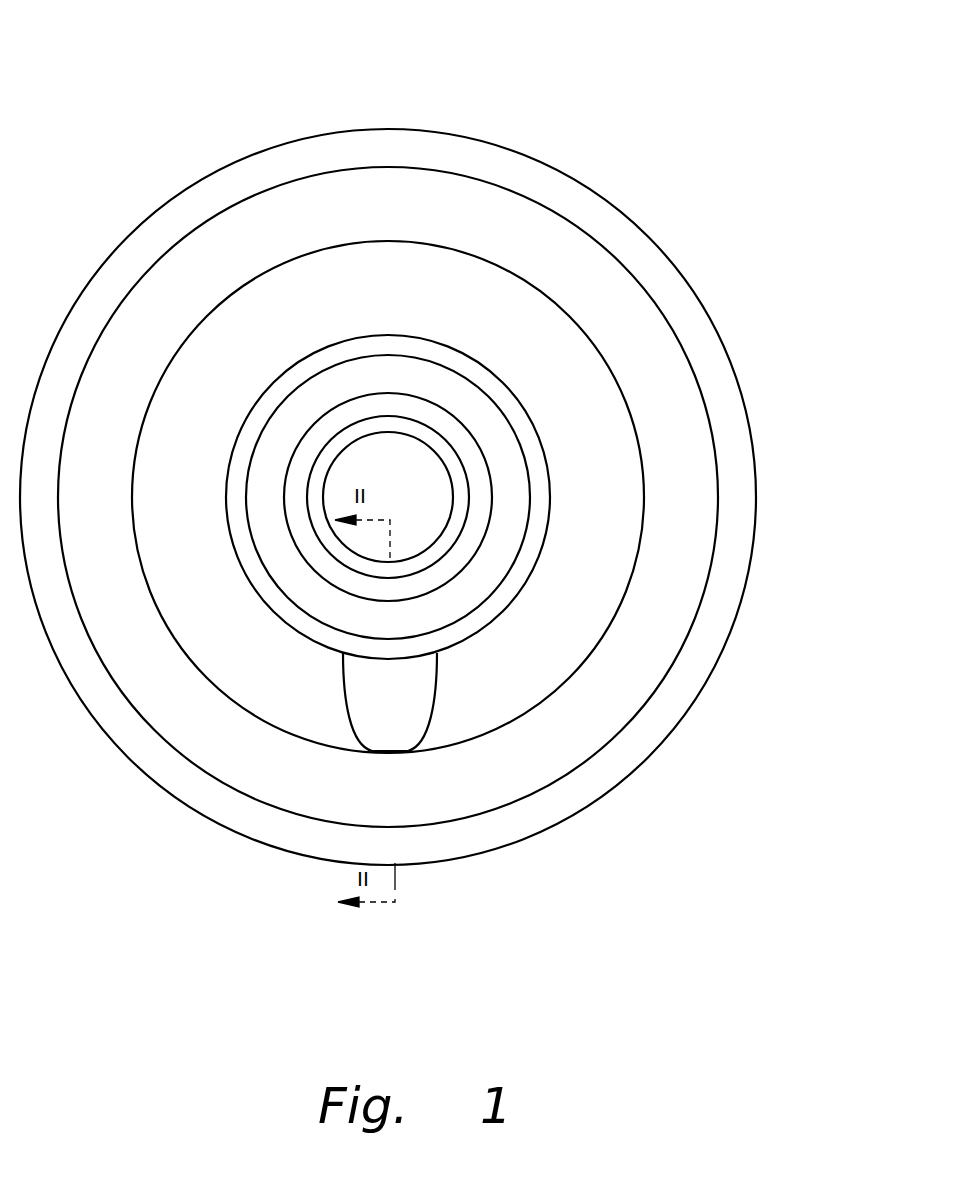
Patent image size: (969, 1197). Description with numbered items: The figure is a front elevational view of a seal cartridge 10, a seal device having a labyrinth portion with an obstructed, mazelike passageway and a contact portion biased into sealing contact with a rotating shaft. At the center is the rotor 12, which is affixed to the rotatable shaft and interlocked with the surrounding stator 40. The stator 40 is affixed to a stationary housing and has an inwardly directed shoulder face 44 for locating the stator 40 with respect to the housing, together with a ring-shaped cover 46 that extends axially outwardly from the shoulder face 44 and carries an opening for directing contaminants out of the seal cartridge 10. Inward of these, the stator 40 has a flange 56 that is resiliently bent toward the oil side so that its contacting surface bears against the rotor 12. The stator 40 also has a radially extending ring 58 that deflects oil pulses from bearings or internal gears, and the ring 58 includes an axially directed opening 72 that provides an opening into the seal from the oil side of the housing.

The seal cartridge 10 is at (607, 180).
The rotor 12 is at (437, 549).
The stator 40 is at (733, 477).
The shoulder face 44 is at (680, 668).
The ring-shaped cover 46 is at (690, 290).
The flange 56 is at (507, 593).
The radially extending ring 58 is at (553, 750).
The axially directed opening 72 is at (418, 718).